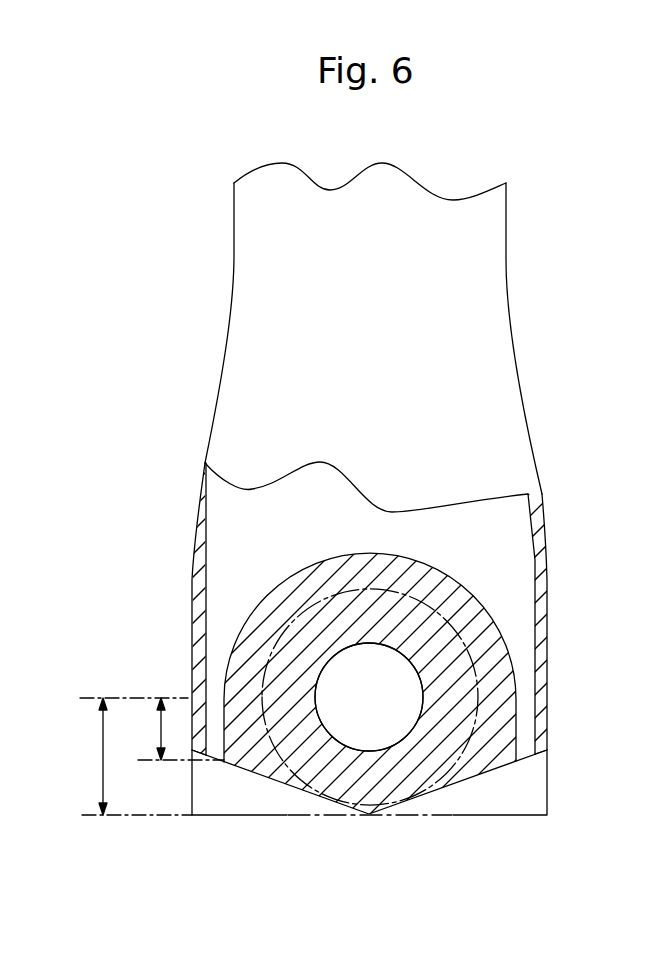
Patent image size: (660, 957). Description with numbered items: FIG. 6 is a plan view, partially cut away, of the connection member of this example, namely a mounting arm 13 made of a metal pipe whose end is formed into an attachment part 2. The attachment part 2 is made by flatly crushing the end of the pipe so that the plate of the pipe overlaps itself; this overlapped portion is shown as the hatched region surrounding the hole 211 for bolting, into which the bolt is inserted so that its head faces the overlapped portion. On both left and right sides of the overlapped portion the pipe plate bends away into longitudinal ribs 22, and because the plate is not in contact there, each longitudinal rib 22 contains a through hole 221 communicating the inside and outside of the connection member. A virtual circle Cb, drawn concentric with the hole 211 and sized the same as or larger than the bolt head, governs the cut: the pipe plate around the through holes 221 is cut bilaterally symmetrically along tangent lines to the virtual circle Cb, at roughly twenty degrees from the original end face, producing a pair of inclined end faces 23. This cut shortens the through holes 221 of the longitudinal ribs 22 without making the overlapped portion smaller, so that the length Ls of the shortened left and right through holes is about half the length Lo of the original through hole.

The mounting arm 13 is at (233, 243).
The attachment part 2 is at (187, 602).
The longitudinal rib 22 is at (193, 673).
The hole for bolting 211 is at (338, 650).
The virtual circle Cb is at (468, 591).
The through hole 221 is at (213, 750).
The inclined end face 23 is at (273, 782).
The length of the original through hole Lo is at (127, 756).
The length of the shortened through hole Ls is at (173, 729).